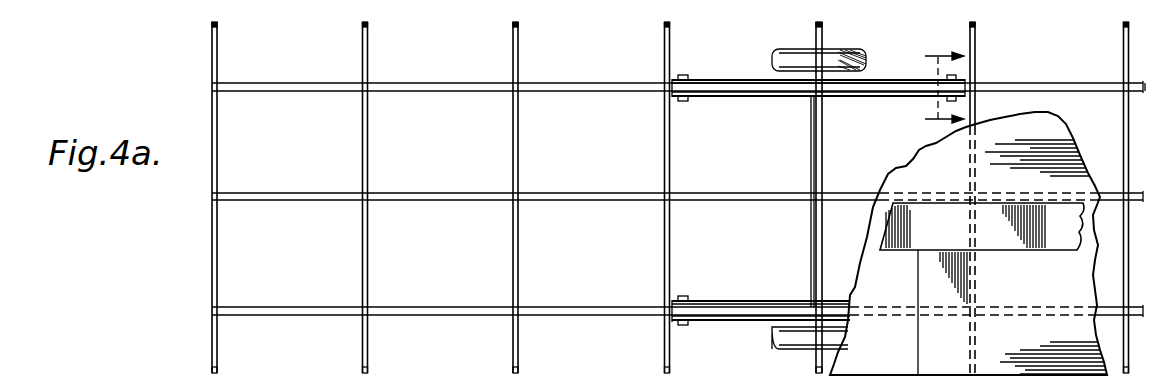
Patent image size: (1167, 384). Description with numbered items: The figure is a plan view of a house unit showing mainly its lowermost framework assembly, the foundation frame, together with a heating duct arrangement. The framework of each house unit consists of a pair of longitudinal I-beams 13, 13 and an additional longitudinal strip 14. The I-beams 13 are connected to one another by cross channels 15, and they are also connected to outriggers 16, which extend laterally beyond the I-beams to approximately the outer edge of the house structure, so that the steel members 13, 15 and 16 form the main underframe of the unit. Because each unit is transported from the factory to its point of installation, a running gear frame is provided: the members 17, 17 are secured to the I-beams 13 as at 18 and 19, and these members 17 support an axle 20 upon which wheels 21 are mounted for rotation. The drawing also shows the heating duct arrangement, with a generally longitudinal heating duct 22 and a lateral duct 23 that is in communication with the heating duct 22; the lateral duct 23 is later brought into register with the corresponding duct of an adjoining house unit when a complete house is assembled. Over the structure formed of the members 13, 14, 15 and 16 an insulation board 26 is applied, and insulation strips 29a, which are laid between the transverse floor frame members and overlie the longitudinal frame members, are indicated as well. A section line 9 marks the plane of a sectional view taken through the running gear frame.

The section line 9- 9 is at (935, 87).
The I-beam 13 is at (437, 88).
The longitudinal strip 14 is at (463, 172).
The cross channel 15 is at (367, 138).
The outrigger 16 is at (518, 60).
The running gear frame member 17 is at (725, 96).
The securing point 18 is at (683, 75).
The securing point 19 is at (955, 75).
The axle 20 is at (811, 160).
The wheel 21 is at (852, 49).
The longitudinal heating duct 22 is at (1063, 228).
The lateral duct 23 is at (918, 284).
The insulation board 26 is at (1072, 133).
The insulation strip 29a is at (696, 377).